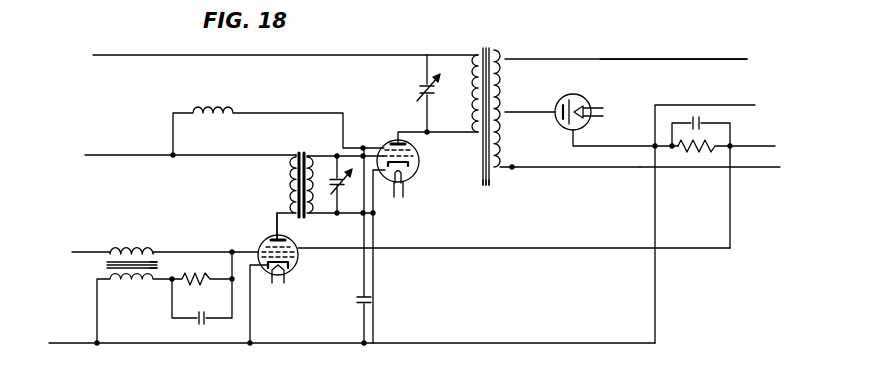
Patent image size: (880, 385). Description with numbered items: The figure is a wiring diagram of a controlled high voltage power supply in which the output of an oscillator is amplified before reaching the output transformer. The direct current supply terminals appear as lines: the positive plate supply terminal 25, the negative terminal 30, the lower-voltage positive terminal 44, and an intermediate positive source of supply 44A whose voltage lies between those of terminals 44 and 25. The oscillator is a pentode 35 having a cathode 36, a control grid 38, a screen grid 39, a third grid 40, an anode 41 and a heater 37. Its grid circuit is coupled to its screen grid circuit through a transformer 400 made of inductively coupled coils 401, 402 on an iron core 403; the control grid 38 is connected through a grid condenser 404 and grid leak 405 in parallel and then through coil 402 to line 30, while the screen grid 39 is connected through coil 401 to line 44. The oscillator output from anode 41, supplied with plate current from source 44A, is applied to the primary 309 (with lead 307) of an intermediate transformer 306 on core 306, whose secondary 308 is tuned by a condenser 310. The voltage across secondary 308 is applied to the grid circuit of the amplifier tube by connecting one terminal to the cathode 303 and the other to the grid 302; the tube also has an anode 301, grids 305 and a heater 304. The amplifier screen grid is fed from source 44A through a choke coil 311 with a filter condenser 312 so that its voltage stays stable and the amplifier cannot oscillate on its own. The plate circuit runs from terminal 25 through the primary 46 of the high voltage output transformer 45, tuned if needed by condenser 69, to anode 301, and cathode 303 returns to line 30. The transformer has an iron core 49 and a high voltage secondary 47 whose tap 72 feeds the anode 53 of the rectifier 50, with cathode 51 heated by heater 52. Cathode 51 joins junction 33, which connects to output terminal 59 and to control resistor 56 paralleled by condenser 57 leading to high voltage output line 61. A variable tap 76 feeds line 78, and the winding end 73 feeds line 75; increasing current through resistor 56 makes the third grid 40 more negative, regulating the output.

The positive terminal 25 is at (100, 55).
The negative terminal 30 is at (58, 343).
The junction 33 is at (654, 145).
The pentode 35 is at (270, 236).
The cathode 36 is at (296, 265).
The heater 37 is at (290, 272).
The control grid 38 is at (298, 258).
The screen grid 39 is at (298, 252).
The third grid 40 is at (291, 246).
The anode 41 is at (285, 240).
The positive terminal 44 is at (72, 252).
The positive source of supply 44A is at (95, 155).
The high voltage output transformer 45 is at (487, 50).
The primary winding 46 is at (469, 100).
The high voltage secondary winding 47 is at (508, 85).
The iron core 49 is at (486, 192).
The high voltage rectifier 50 is at (573, 94).
The cathode 51 is at (572, 100).
The heater 52 is at (584, 106).
The anode 53 is at (562, 119).
The control resistor 56 is at (698, 152).
The condenser 57 is at (699, 120).
The output terminal 59 is at (755, 105).
The high voltage output line 61 is at (775, 146).
The condenser 69 is at (420, 87).
The tap 72 is at (505, 112).
The end of the high voltage secondary winding 73 is at (513, 170).
The line 75 is at (779, 169).
The variable tap 76 is at (505, 60).
The line 78 is at (747, 59).
The anode 301 is at (407, 143).
The grid 302 is at (412, 160).
The cathode 303 is at (406, 172).
The heater 304 is at (400, 197).
The control grids 305 is at (413, 151).
The intermediate transformer 306 is at (303, 152).
The primary winding lead 307 is at (296, 155).
The secondary 308 is at (315, 165).
The primary 309 is at (288, 176).
The condenser 310 is at (345, 190).
The choke coil 311 is at (203, 110).
The filter condenser 312 is at (362, 301).
The transformer 400 is at (100, 265).
The coil 401 is at (121, 250).
The coil 402 is at (137, 284).
The iron core 403 is at (160, 262).
The grid condenser 404 is at (203, 276).
The grid leak 405 is at (197, 318).